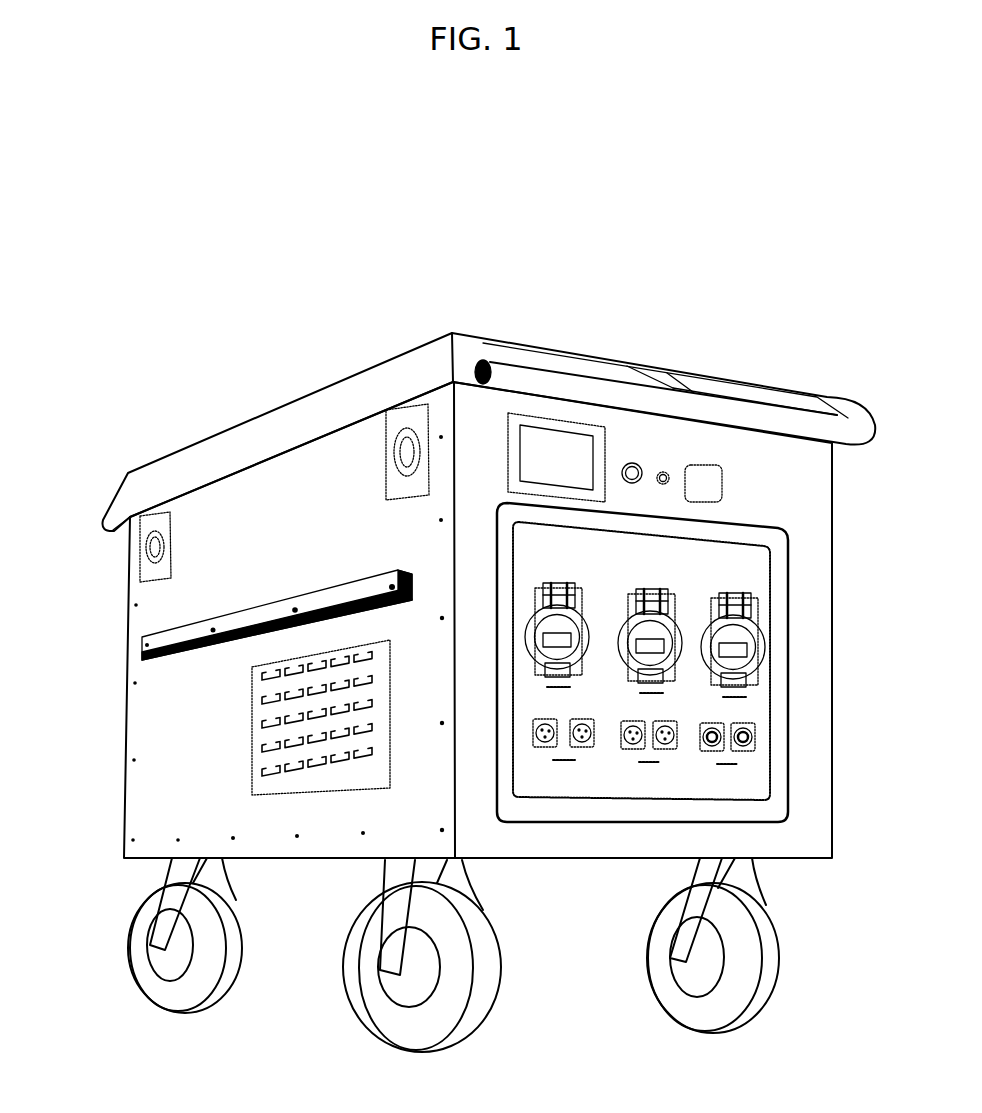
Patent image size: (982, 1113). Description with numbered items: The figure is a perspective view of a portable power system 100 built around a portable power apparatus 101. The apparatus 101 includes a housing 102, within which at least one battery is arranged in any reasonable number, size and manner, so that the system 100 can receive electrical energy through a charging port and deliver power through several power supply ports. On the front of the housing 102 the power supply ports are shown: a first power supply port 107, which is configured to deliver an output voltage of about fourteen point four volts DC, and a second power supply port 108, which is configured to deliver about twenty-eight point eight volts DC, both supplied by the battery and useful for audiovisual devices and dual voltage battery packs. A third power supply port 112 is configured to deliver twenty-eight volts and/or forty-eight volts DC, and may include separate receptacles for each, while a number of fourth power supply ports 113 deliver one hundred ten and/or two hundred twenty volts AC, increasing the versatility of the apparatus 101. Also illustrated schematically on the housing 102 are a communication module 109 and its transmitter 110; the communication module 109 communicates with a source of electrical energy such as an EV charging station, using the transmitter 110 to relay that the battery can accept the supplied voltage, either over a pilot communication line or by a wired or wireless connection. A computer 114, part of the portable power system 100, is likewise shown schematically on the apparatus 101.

The portable power system 100 is at (158, 350).
The portable power apparatus 101 is at (88, 466).
The housing 102 is at (147, 717).
The first power supply port 107 is at (561, 780).
The second power supply port 108 is at (641, 782).
The communication module 109 is at (637, 467).
The transmitter 110 is at (708, 473).
The third power supply port 112 is at (756, 770).
The fourth power supply port 113 is at (766, 651).
The computer 114 is at (553, 450).